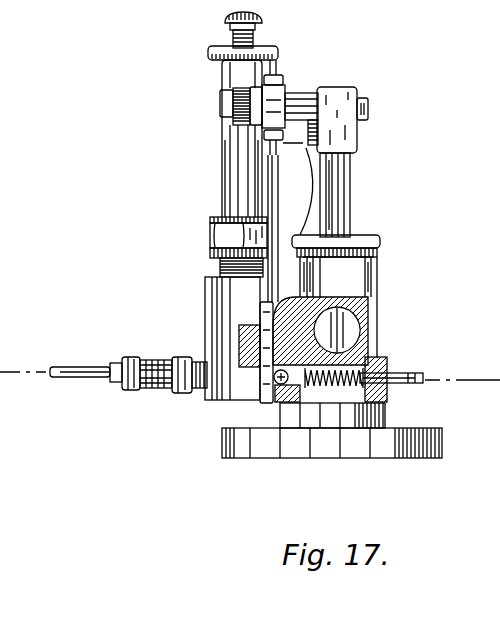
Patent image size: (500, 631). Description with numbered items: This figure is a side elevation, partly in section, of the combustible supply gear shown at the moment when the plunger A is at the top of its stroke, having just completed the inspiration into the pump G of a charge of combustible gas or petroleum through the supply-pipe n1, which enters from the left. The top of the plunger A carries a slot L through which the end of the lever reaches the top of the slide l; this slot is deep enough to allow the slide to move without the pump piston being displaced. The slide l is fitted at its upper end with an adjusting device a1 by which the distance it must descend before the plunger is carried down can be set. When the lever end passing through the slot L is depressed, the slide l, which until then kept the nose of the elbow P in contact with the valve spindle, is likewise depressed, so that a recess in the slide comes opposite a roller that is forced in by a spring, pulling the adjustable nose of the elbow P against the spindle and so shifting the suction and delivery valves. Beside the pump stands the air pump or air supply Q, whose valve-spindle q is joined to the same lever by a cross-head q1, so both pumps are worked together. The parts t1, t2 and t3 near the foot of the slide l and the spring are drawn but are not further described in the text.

The adjusting device a1 is at (253, 42).
The plunger A is at (237, 197).
The slot L is at (240, 140).
The cross-head q1 is at (288, 108).
The valve-spindle q is at (340, 183).
The slide l is at (268, 302).
The pump G is at (232, 338).
The block t1 is at (272, 342).
The slide t2 is at (265, 365).
The spring t3 is at (350, 382).
The air pump Q is at (357, 275).
The elbow P is at (401, 372).
The supply-pipe n1 is at (73, 381).